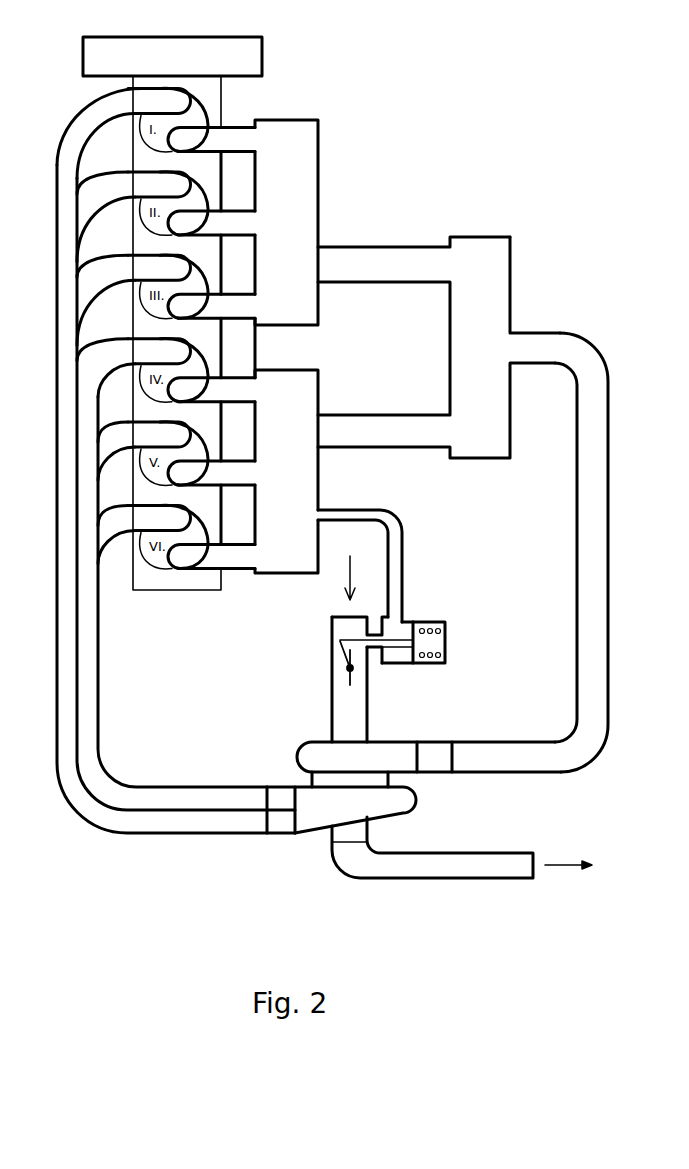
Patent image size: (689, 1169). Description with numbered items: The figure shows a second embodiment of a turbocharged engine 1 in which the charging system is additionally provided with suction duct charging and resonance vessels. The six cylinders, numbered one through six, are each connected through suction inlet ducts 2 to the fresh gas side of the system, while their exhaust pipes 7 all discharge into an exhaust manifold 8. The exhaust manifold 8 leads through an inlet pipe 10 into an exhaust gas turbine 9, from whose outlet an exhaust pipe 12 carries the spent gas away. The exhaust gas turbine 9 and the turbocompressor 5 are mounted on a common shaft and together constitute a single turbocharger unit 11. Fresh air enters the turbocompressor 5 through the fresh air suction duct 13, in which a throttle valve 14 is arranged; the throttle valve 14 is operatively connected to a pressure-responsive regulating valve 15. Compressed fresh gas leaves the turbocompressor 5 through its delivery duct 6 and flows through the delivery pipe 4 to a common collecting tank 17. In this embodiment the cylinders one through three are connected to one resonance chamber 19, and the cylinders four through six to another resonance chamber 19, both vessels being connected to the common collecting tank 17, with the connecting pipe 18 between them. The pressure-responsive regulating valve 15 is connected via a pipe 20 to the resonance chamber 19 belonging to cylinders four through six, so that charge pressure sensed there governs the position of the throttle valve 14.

The engine 1 is at (178, 48).
The suction inlet ducts 2 is at (232, 137).
The delivery pipe 4 is at (595, 427).
The turbocompressor 5 is at (375, 755).
The delivery duct 6 is at (433, 752).
The exhaust pipes 7 is at (105, 443).
The exhaust manifold 8 is at (87, 681).
The exhaust gas turbine 9 is at (323, 810).
The inlet pipe 10 is at (282, 800).
The turbocharger unit 11 is at (320, 780).
The exhaust pipe 12 is at (436, 870).
The fresh air suction duct 13 is at (342, 631).
The throttle valve 14 is at (348, 680).
The pressure-responsive regulating valve 15 is at (430, 623).
The collecting tank 17 is at (493, 273).
The exhaust connecting pipe 18 is at (385, 265).
The resonance chamber 19 is at (307, 147).
The pipe 20 is at (398, 528).